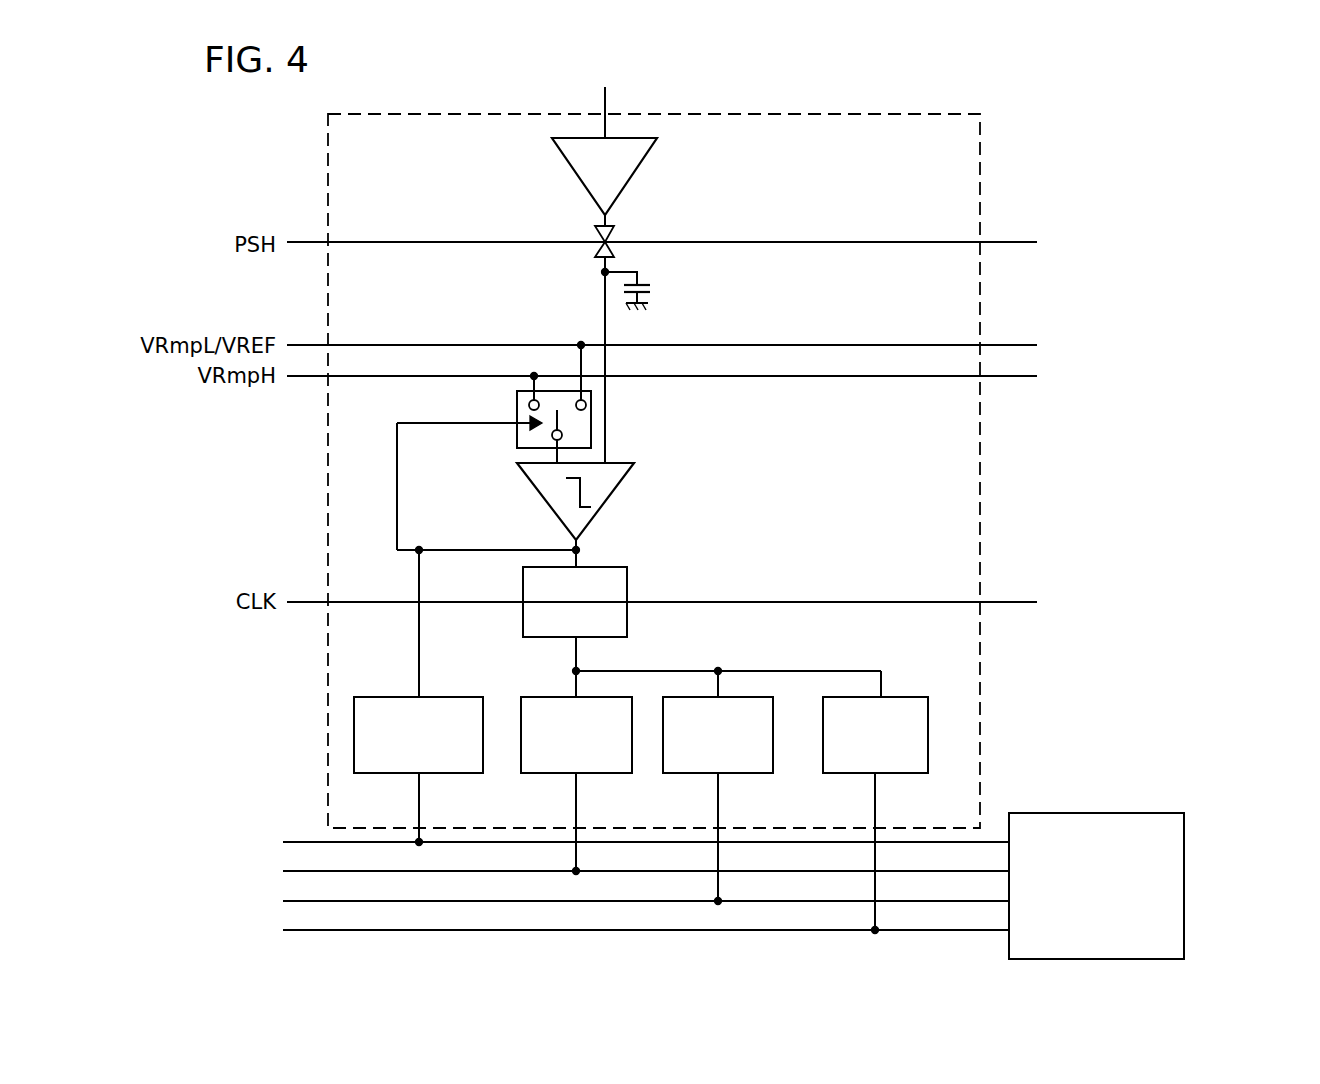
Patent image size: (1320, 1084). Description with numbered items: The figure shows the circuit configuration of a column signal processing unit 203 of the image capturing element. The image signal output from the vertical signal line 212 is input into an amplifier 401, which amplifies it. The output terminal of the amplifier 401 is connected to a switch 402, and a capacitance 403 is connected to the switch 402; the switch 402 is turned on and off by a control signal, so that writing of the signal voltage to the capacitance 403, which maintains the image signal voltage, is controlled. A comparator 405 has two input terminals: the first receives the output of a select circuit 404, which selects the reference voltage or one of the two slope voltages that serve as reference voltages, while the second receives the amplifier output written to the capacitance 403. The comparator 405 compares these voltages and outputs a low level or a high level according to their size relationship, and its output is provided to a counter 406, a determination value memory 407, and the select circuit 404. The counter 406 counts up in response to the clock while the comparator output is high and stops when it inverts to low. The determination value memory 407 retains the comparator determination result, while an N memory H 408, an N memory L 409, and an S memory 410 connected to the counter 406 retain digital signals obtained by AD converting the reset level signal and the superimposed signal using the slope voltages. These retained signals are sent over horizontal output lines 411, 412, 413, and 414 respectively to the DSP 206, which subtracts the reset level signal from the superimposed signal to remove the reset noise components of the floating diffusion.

The column signal processing unit 203 is at (864, 112).
The vertical signal line 212 is at (606, 98).
The amplifier 401 is at (640, 165).
The switch 402 is at (594, 232).
The capacitance 403 is at (655, 285).
The select circuit 404 is at (517, 440).
The comparator 405 is at (622, 486).
The counter 406 is at (627, 587).
The determination value memory 407 is at (450, 773).
The N memory H 408 is at (600, 773).
The N memory L 409 is at (744, 773).
The S memory 410 is at (900, 773).
The horizontal output line 411 is at (283, 842).
The horizontal output line 412 is at (283, 871).
The horizontal output line 413 is at (283, 901).
The horizontal output line 414 is at (283, 930).
The DSP 206 is at (1184, 850).